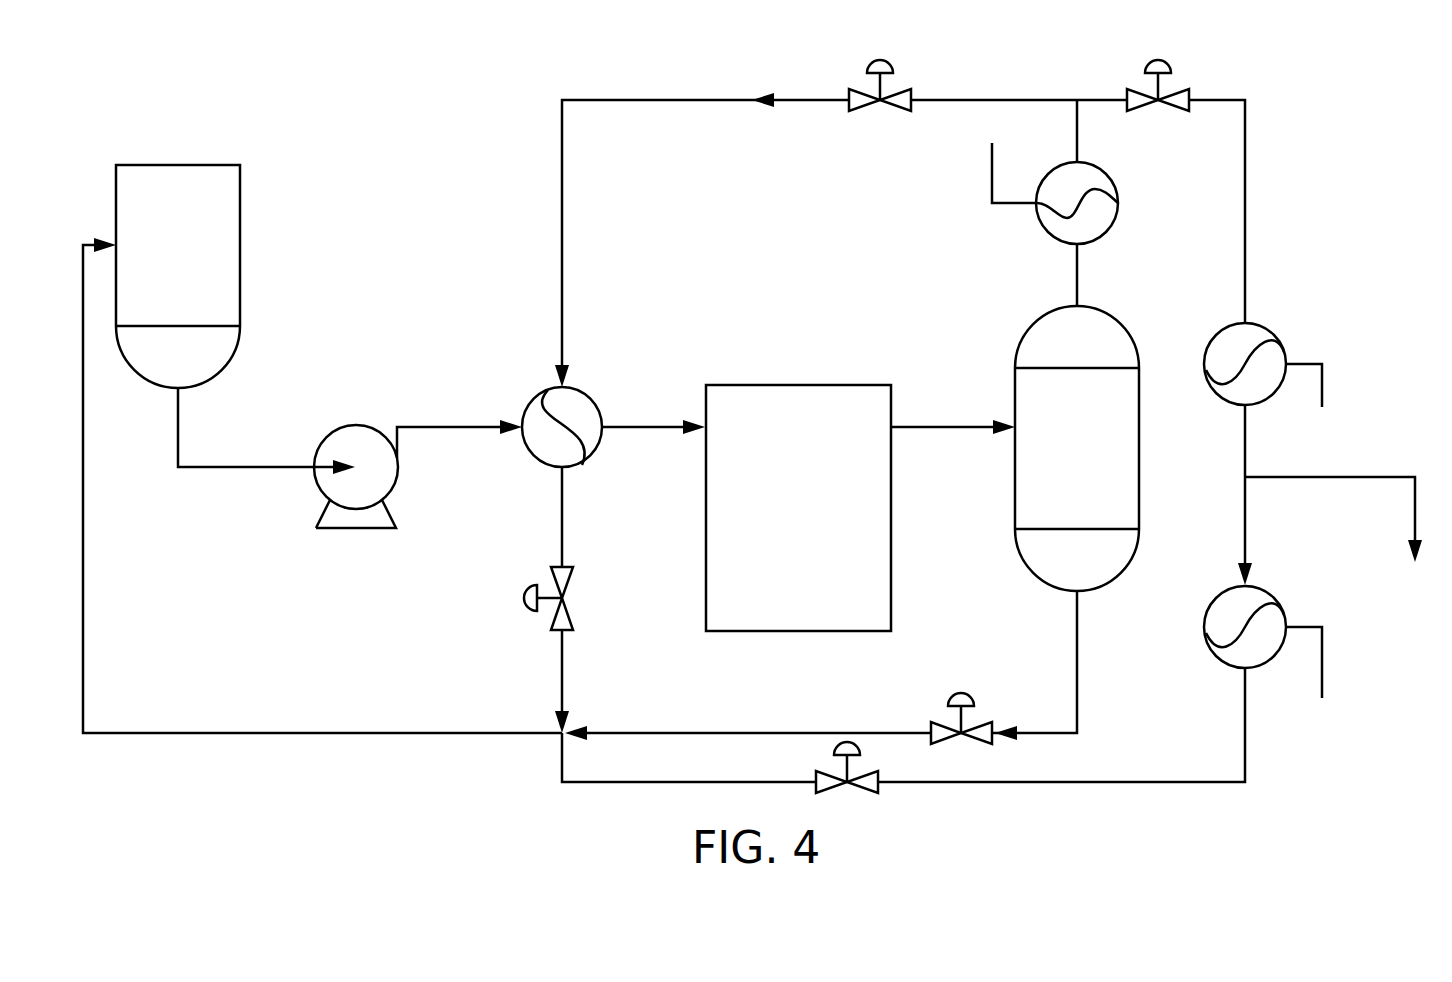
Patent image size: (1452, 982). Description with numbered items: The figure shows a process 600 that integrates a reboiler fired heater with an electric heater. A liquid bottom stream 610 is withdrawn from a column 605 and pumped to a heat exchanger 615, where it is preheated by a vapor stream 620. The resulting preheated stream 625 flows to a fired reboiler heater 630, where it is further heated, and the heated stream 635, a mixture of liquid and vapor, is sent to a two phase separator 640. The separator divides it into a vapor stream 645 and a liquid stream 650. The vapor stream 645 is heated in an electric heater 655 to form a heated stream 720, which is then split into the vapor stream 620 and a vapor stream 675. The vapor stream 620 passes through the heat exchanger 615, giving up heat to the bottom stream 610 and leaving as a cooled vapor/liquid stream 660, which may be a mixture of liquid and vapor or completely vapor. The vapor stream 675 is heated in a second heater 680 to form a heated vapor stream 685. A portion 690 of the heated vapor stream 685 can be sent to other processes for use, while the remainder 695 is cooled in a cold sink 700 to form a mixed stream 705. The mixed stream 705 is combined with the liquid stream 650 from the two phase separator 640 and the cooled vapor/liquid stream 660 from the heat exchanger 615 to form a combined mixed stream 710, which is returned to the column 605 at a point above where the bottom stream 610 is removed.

The process 600 is at (398, 104).
The column 605 is at (222, 165).
The bottom stream 610 is at (252, 467).
The heat exchanger 615 is at (550, 390).
The vapor stream 620 is at (563, 283).
The preheated stream 625 is at (655, 421).
The fired reboiler heater 630 is at (800, 385).
The heated stream 635 is at (955, 425).
The two phase separator 640 is at (1125, 318).
The vapor stream 645 is at (1078, 272).
The liquid stream 650 is at (1075, 652).
The electric heater 655 is at (1110, 182).
The cooled vapor/liquid stream 660 is at (563, 517).
The vapor stream 675 is at (1247, 135).
The second heater 680 is at (1270, 330).
The heated vapor stream 685 is at (1246, 445).
The portion 690 is at (1360, 475).
The remainder 695 is at (1242, 510).
The cold sink 700 is at (1270, 590).
The mixed stream 705 is at (1147, 782).
The combined mixed stream 710 is at (424, 733).
The heated stream 720 is at (1078, 128).